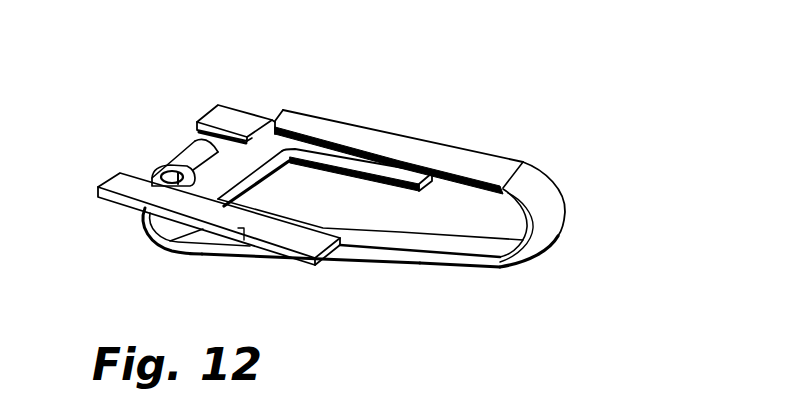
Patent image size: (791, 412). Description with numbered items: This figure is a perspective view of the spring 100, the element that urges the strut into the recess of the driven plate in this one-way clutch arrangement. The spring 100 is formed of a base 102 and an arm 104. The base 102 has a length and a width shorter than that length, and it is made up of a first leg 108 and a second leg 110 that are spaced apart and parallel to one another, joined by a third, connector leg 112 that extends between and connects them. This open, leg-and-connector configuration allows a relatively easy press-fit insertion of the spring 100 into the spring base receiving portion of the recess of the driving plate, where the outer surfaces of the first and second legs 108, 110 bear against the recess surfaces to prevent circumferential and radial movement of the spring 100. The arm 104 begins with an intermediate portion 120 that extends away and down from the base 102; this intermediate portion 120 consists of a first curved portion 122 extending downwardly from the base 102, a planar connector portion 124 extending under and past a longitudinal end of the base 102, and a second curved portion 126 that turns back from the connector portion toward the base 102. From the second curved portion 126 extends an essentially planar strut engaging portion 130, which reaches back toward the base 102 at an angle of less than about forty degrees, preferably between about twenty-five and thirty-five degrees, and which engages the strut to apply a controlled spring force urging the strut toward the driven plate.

The spring 100 is at (297, 101).
The base 102 is at (263, 128).
The arm 104 is at (410, 252).
The first leg 108 is at (143, 209).
The second leg 110 is at (248, 118).
The connector leg 112 is at (222, 166).
The intermediate portion 120 is at (457, 253).
The first curved portion 122 is at (476, 163).
The planar connector portion 124 is at (368, 250).
The second curved portion 126 is at (547, 228).
The strut engaging portion 130 is at (397, 143).